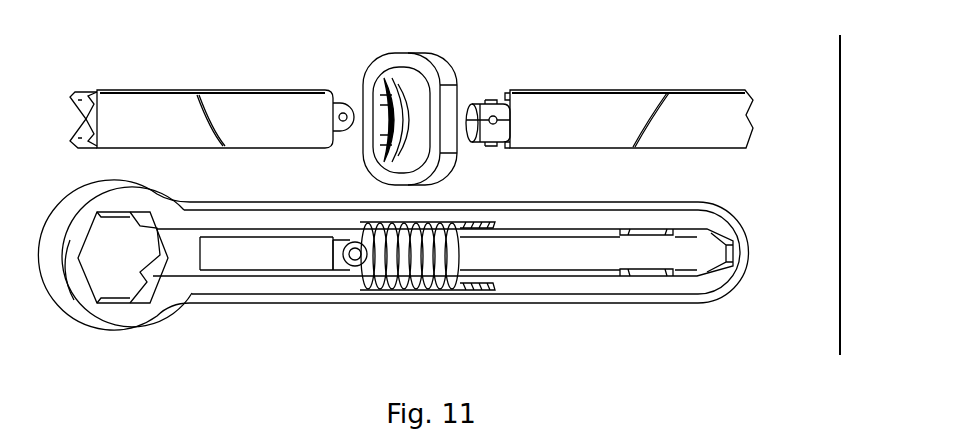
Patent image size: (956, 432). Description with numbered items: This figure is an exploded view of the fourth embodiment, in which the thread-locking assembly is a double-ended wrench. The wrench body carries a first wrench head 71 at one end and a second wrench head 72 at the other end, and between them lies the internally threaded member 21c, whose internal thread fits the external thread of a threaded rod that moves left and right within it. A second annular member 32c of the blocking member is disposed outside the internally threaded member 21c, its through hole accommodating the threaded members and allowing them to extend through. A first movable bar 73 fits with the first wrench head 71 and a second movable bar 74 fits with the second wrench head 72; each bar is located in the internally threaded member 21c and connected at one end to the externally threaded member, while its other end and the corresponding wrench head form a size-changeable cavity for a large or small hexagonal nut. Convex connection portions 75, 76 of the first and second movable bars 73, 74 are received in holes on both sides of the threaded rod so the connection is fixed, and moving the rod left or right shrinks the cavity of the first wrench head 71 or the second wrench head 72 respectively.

The first movable bar 73 is at (150, 118).
The convex connection portion 75 is at (343, 112).
The second annular member 32c is at (427, 92).
The second movable bar 74 is at (602, 120).
The convex connection portion 76 is at (495, 135).
The first wrench head 71 is at (125, 268).
The second wrench head 72 is at (698, 253).
The internally threaded member 21c is at (455, 295).